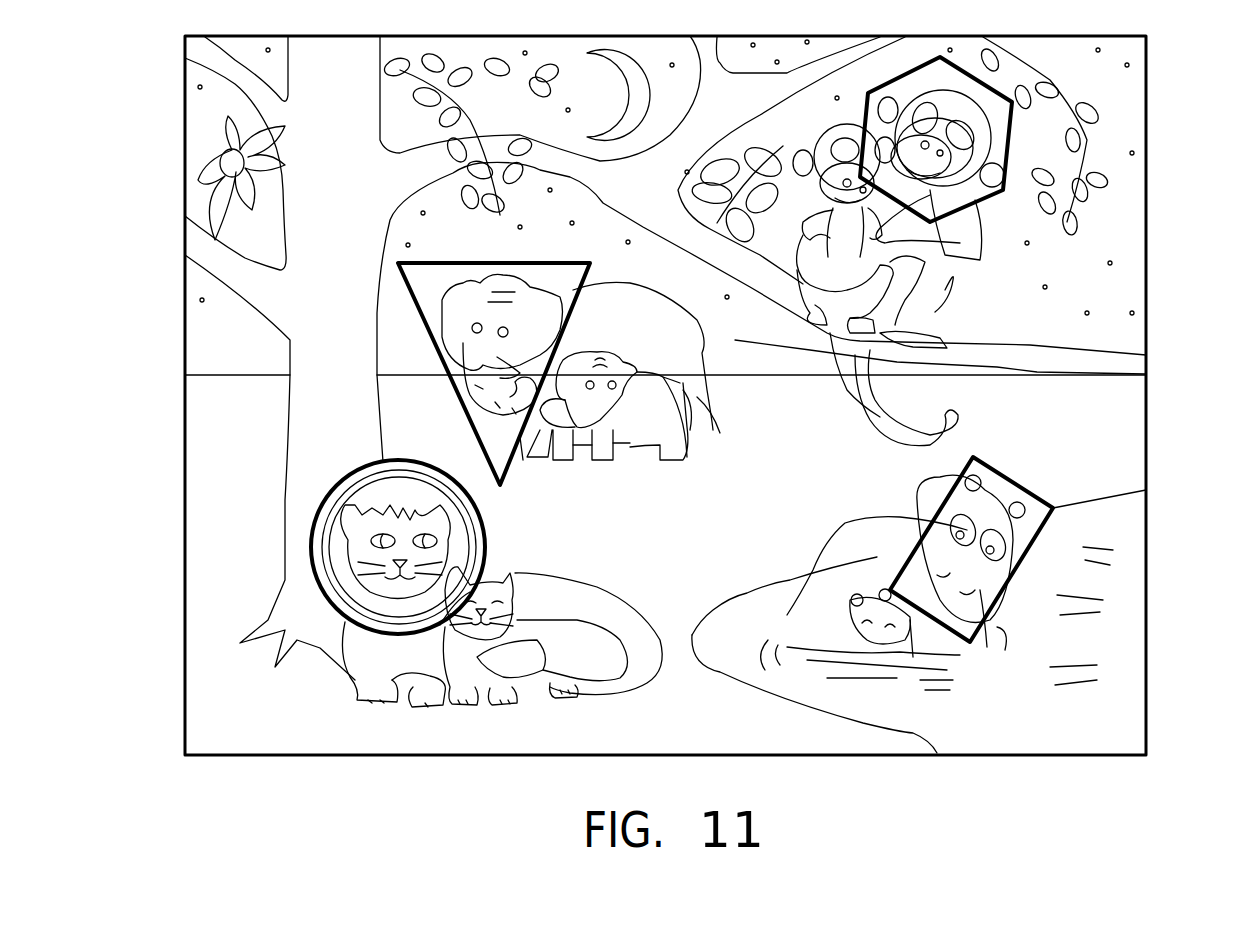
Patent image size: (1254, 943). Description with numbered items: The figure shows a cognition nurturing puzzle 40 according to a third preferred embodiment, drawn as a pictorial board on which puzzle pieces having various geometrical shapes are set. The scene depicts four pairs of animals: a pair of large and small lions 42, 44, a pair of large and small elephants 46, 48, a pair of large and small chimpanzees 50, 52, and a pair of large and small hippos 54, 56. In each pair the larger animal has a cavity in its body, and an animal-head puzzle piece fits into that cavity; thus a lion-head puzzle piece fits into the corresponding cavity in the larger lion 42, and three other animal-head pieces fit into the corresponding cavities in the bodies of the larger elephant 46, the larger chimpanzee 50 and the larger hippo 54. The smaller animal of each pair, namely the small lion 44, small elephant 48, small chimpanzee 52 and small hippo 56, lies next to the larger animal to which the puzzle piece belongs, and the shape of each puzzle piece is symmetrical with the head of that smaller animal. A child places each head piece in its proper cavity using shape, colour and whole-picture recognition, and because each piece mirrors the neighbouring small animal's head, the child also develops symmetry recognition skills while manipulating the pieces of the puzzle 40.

The puzzle 40 is at (1147, 327).
The large lion 42 is at (543, 585).
The small lion 44 is at (587, 637).
The large elephant 46 is at (627, 297).
The small elephant 48 is at (650, 425).
The large chimpanzee 50 is at (970, 248).
The small chimpanzee 52 is at (800, 270).
The large hippo 54 is at (893, 522).
The small hippo 56 is at (807, 615).